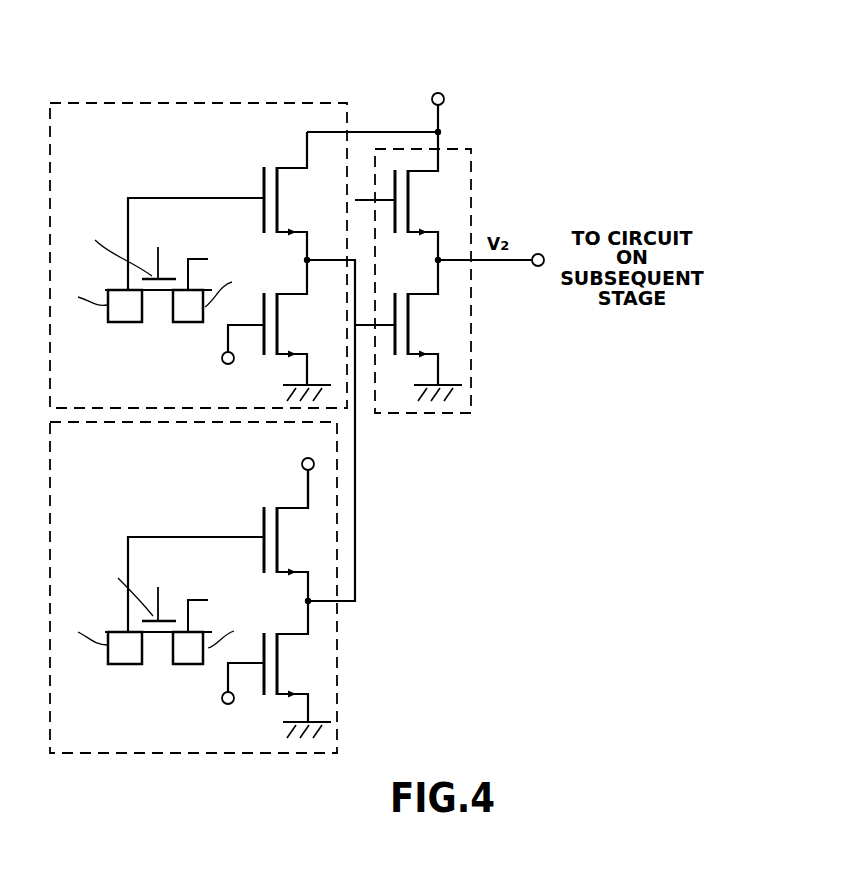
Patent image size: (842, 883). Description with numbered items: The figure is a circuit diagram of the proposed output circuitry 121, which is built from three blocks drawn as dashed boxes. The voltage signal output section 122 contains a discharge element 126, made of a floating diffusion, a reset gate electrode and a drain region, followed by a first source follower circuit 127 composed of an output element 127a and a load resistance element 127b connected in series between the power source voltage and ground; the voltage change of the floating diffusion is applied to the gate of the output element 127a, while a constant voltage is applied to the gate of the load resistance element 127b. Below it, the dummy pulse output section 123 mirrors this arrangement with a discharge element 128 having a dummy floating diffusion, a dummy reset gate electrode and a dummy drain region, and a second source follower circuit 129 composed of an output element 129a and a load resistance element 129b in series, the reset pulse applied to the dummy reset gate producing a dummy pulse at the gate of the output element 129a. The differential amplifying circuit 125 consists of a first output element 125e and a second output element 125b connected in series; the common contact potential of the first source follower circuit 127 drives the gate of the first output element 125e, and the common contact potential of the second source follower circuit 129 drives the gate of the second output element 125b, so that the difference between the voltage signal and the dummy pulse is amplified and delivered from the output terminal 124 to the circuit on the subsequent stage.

The output circuitry 121 is at (252, 94).
The voltage signal output section 122 is at (115, 101).
The dummy pulse output section 123 is at (340, 697).
The output terminal 124 is at (540, 255).
The differential amplifying circuit 125 is at (458, 149).
The differential transistor 125e is at (408, 193).
The second output element 125b is at (408, 339).
The discharge element 126 is at (158, 332).
The first source follower circuit 127 is at (244, 156).
The output element 127a is at (292, 168).
The load resistance element 127b is at (277, 333).
The discharge element 128 is at (160, 672).
The second source follower circuit 129 is at (322, 545).
The output element 129a is at (282, 505).
The load resistance element 129b is at (280, 700).